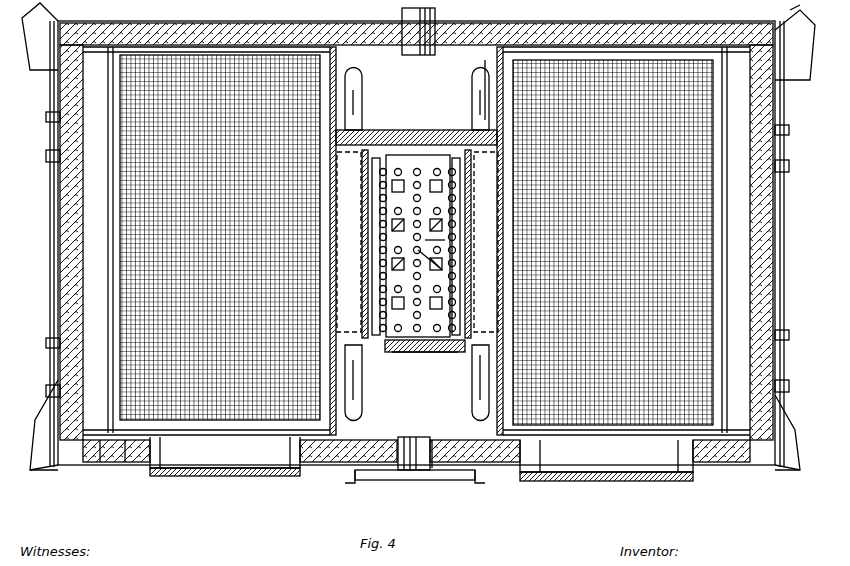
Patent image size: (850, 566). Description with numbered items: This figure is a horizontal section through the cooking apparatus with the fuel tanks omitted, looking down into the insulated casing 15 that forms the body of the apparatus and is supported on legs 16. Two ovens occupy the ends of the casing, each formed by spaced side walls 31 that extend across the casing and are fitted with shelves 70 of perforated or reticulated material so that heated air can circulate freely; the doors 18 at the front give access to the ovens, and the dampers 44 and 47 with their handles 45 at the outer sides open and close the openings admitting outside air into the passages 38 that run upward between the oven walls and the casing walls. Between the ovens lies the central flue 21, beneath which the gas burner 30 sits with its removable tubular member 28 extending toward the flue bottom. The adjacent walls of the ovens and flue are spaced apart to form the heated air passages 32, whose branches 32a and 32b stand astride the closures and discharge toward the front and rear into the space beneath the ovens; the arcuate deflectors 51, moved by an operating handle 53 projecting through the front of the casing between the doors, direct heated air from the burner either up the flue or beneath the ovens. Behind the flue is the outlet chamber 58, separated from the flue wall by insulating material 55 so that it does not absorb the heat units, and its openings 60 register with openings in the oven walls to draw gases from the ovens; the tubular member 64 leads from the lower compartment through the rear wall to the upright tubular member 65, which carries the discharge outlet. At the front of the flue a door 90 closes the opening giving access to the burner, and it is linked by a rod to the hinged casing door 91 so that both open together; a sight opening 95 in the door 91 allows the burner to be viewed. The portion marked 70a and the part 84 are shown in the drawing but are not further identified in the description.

The casing 15 is at (112, 462).
The legs 16 is at (44, 40).
The doors 18 is at (278, 478).
The flue 21 is at (364, 180).
The tubular member 28 is at (392, 235).
The gas burner 30 is at (440, 246).
The side walls 31 is at (108, 155).
The heated air passages 32 is at (417, 242).
The branch 32a is at (482, 372).
The branch 32b is at (482, 98).
The passages 38 is at (95, 90).
The dampers 44 is at (52, 122).
The handles 45 is at (110, 440).
The dampers 47 is at (60, 218).
The deflector 51 is at (373, 290).
The operating handle 53 is at (470, 480).
The insulating material 55 is at (400, 145).
The outlet chamber 58 is at (478, 78).
The openings 60 is at (352, 95).
The tubular member 64 is at (418, 50).
The tubular member 65 is at (790, 8).
The shelves 70 is at (140, 245).
The screen portion 70a is at (432, 266).
The lower tube 84 is at (400, 352).
The door 90 is at (426, 352).
The door 91 is at (440, 455).
The sight opening 95 is at (410, 437).